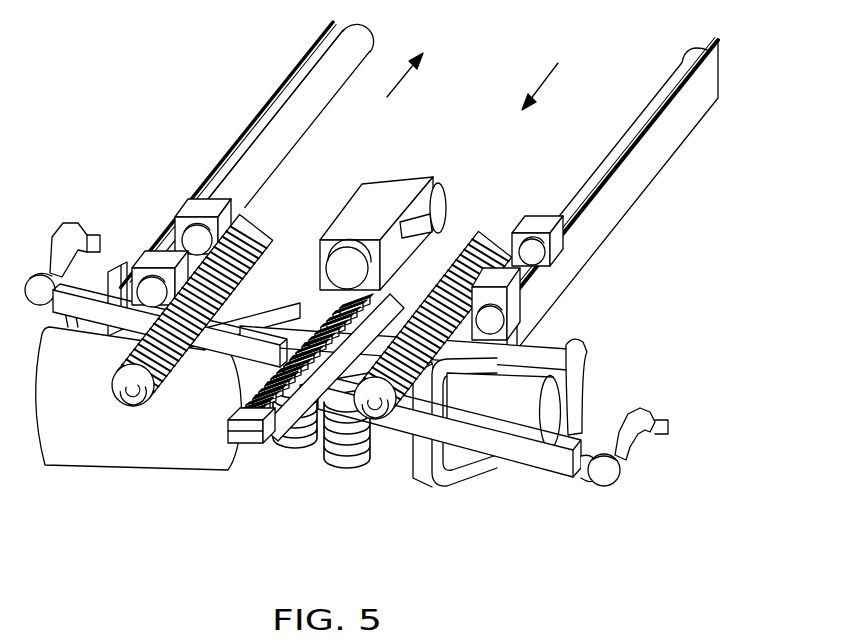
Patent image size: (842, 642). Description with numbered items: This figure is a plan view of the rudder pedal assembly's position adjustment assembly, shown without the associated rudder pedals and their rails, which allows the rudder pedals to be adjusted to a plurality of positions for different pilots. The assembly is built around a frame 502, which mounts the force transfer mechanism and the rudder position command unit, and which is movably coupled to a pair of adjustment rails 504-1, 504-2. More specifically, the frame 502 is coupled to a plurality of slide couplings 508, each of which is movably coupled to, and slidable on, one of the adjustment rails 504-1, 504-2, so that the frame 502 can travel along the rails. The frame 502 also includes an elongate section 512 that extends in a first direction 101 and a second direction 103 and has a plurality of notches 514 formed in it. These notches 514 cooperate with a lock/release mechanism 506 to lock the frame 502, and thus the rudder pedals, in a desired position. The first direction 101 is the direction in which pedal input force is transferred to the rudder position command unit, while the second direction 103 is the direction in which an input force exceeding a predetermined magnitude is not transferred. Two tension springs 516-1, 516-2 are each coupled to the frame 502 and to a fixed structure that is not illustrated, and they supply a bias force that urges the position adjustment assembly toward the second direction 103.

The first direction 101 is at (403, 78).
The second direction 103 is at (543, 82).
The frame 502 is at (240, 330).
The adjustment rail 504-1 is at (273, 96).
The adjustment rail 504-2 is at (718, 48).
The lock/release mechanism 506 is at (402, 184).
The slide couplings 508 is at (202, 210).
The elongate section 512 is at (250, 442).
The notches 514 is at (320, 318).
The tension spring 516-1 is at (137, 400).
The tension spring 516-2 is at (377, 417).